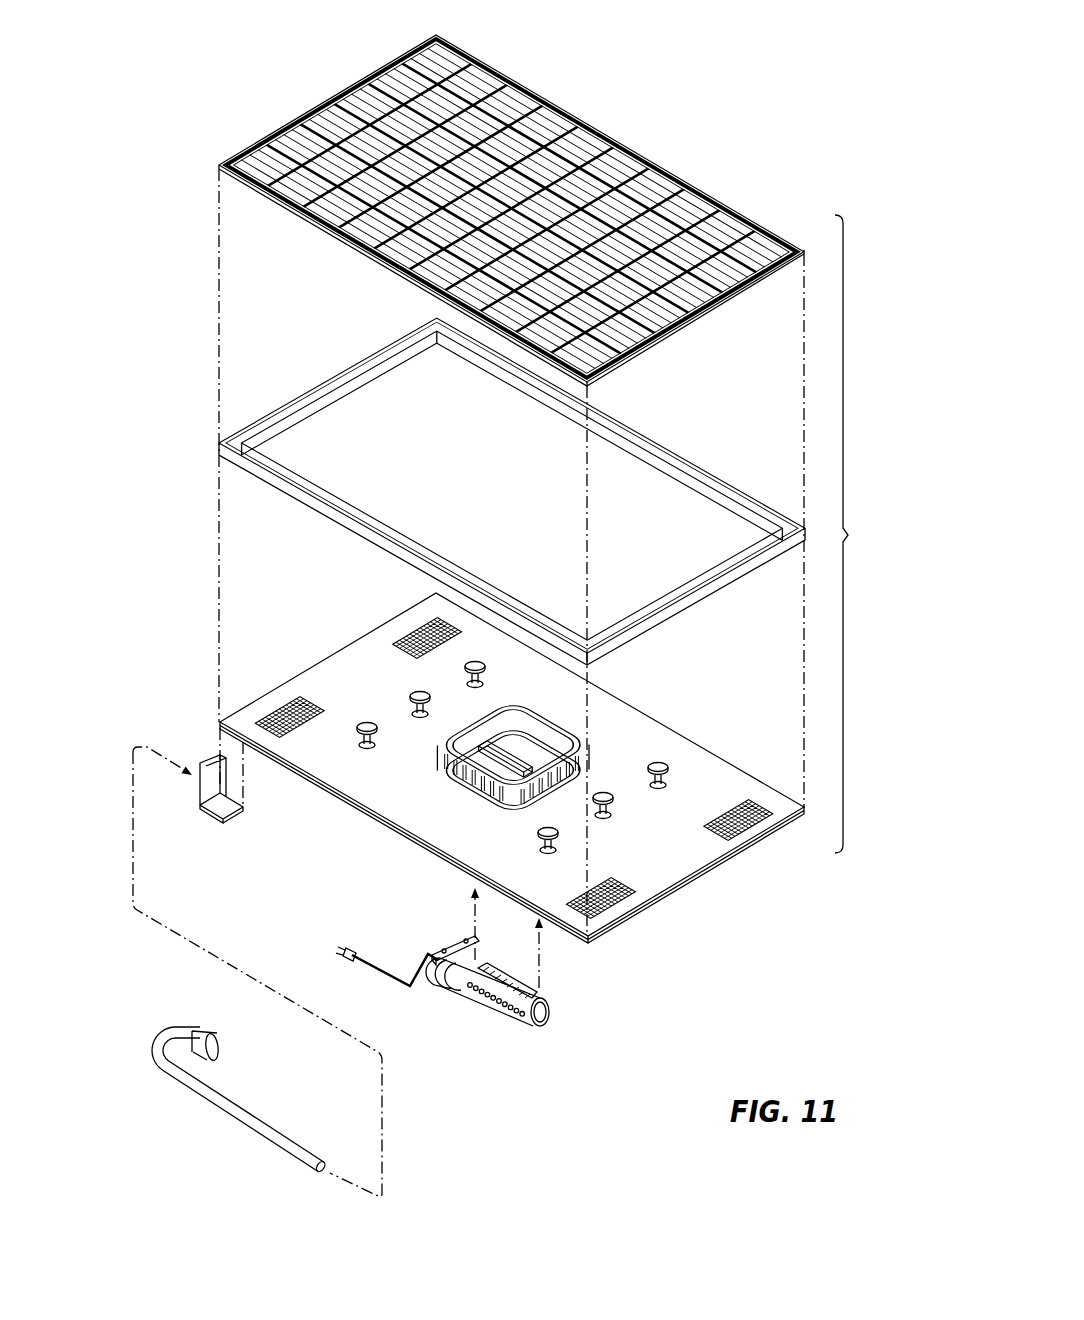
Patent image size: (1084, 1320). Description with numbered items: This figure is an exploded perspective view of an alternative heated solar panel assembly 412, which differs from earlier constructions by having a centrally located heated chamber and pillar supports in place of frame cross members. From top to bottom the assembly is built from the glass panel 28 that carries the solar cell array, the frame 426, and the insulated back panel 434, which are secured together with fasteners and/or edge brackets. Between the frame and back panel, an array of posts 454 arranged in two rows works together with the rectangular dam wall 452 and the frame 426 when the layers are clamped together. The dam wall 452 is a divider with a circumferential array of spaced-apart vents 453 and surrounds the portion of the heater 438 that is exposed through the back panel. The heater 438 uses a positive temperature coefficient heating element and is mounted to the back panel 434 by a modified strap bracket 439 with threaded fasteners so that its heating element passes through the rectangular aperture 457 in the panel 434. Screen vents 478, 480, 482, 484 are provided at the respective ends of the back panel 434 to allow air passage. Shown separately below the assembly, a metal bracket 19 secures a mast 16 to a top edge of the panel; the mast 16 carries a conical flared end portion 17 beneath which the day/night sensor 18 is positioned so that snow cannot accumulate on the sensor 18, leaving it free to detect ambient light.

The glass panel 28 is at (708, 318).
The solar panel assembly 412 is at (863, 534).
The frame 426 is at (710, 598).
The insulated back panel 434 is at (700, 884).
The screen vent 478 is at (278, 710).
The screen vent 480 is at (415, 624).
The screen vent 482 is at (598, 882).
The screen vent 484 is at (733, 803).
The posts 454 is at (659, 761).
The rectangular dam wall 452 is at (460, 778).
The vents 453 is at (438, 791).
The rectangular aperture 457 is at (490, 748).
The metal bracket 19 is at (198, 798).
The mast 16 is at (152, 1046).
The flared end portion 17 is at (208, 1030).
The day/night sensor 18 is at (219, 1049).
The heater 438 is at (495, 1002).
The strap bracket 439 is at (455, 943).